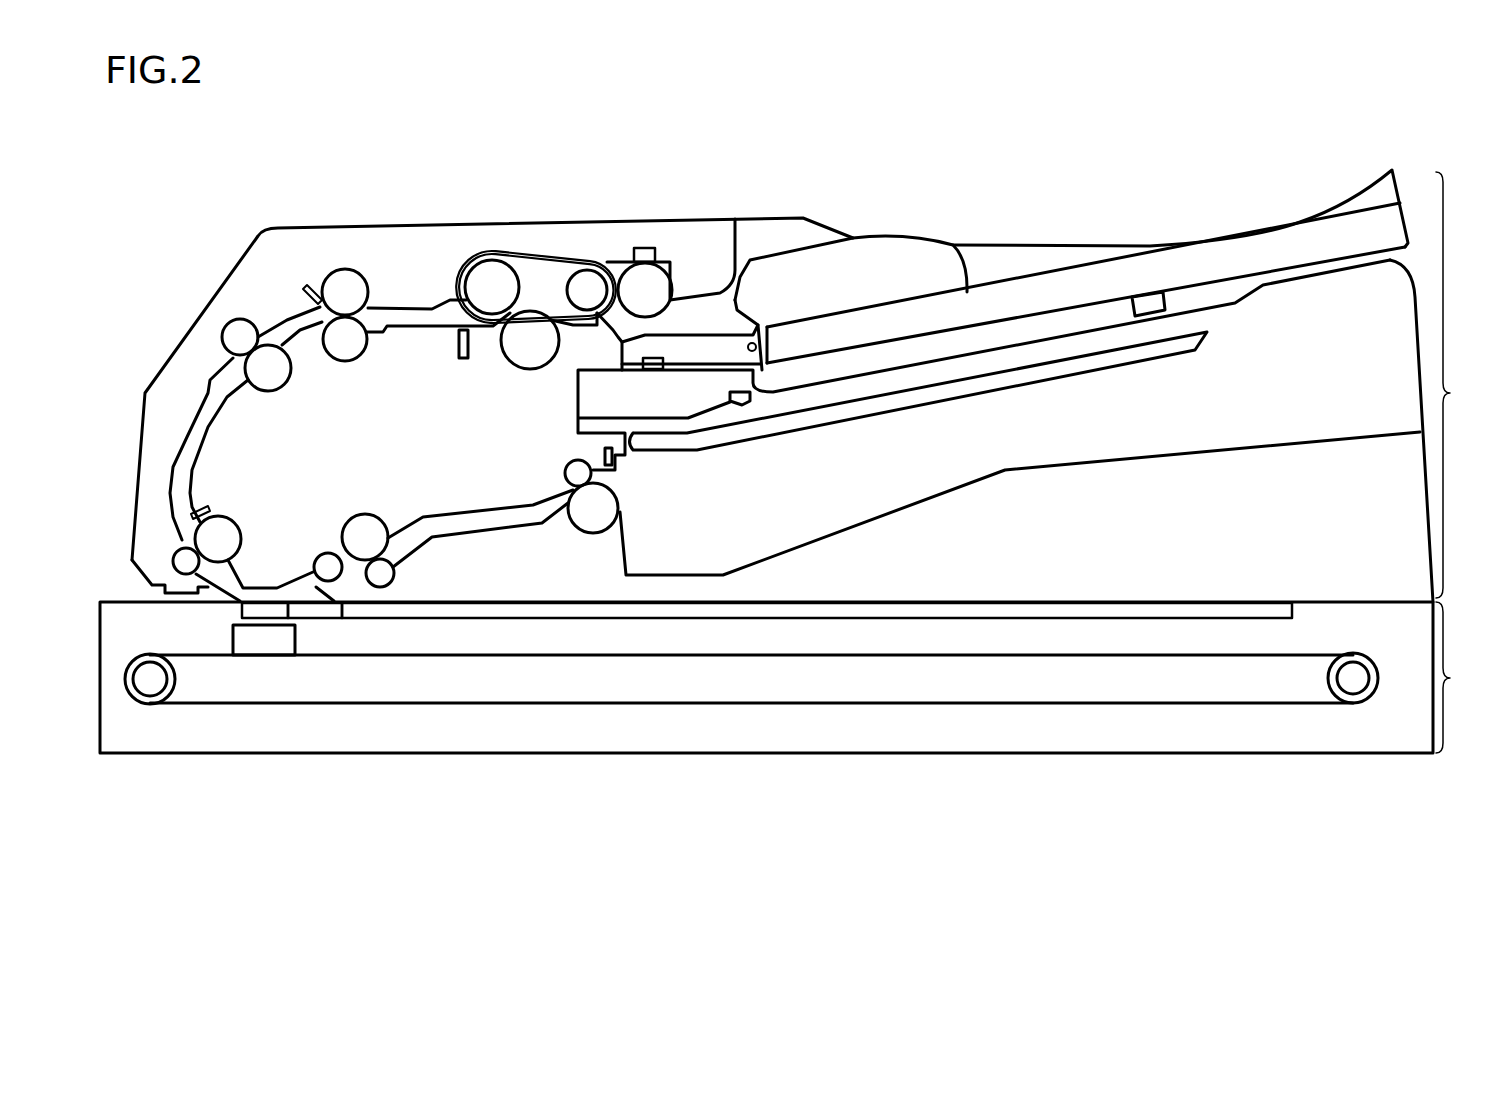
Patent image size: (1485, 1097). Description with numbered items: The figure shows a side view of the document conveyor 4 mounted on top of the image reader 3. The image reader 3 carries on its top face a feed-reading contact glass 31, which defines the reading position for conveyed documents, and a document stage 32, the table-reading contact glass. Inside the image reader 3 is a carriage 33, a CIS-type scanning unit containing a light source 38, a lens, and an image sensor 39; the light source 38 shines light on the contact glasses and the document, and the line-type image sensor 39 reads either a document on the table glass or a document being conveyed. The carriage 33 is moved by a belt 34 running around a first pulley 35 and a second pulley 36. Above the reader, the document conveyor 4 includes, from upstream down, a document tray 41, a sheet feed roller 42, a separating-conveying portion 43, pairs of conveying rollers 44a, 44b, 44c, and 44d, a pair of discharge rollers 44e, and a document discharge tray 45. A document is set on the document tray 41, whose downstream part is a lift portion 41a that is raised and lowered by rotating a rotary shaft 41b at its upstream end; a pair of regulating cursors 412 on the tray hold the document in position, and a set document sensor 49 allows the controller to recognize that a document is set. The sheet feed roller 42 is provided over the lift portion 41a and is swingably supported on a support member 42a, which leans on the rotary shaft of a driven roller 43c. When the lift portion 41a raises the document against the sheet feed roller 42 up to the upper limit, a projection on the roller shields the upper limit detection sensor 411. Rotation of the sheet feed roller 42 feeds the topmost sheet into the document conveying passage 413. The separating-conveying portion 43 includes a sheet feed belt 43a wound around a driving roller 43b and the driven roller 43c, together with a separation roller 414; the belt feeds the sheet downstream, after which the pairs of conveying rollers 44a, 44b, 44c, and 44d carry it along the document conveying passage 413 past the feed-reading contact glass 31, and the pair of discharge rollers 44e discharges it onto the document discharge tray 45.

The image reader 3 is at (786, 697).
The document conveyor 4 is at (790, 347).
The feed-reading contact glass 31 is at (240, 605).
The document stage 32 is at (1170, 610).
The carriage 33 is at (262, 739).
The belt 34 is at (1000, 703).
The first pulley 35 is at (1353, 688).
The second pulley 36 is at (150, 690).
The light source 38 is at (262, 739).
The image sensor 39 is at (262, 645).
The document tray 41 is at (995, 290).
The lift portion 41a is at (702, 353).
The rotary shaft 41b is at (757, 347).
The sheet feed roller 42 is at (657, 283).
The support member 42a is at (617, 268).
The separating-conveying portion 43 is at (555, 209).
The sheet feed belt 43a is at (540, 252).
The driving roller 43b is at (482, 278).
The driven roller 43c is at (611, 222).
The pair of conveying rollers 44a is at (345, 290).
The pair of conveying rollers 44b is at (268, 372).
The pair of conveying rollers 44c is at (222, 532).
The pair of conveying rollers 44d is at (362, 530).
The pair of discharge rollers 44e is at (587, 517).
The document discharge tray 45 is at (872, 520).
The set document sensor 49 is at (652, 369).
The upper limit detection sensor 411 is at (648, 246).
The regulating cursors 412 is at (865, 260).
The document conveying passage 413 is at (204, 422).
The separation roller 414 is at (528, 332).